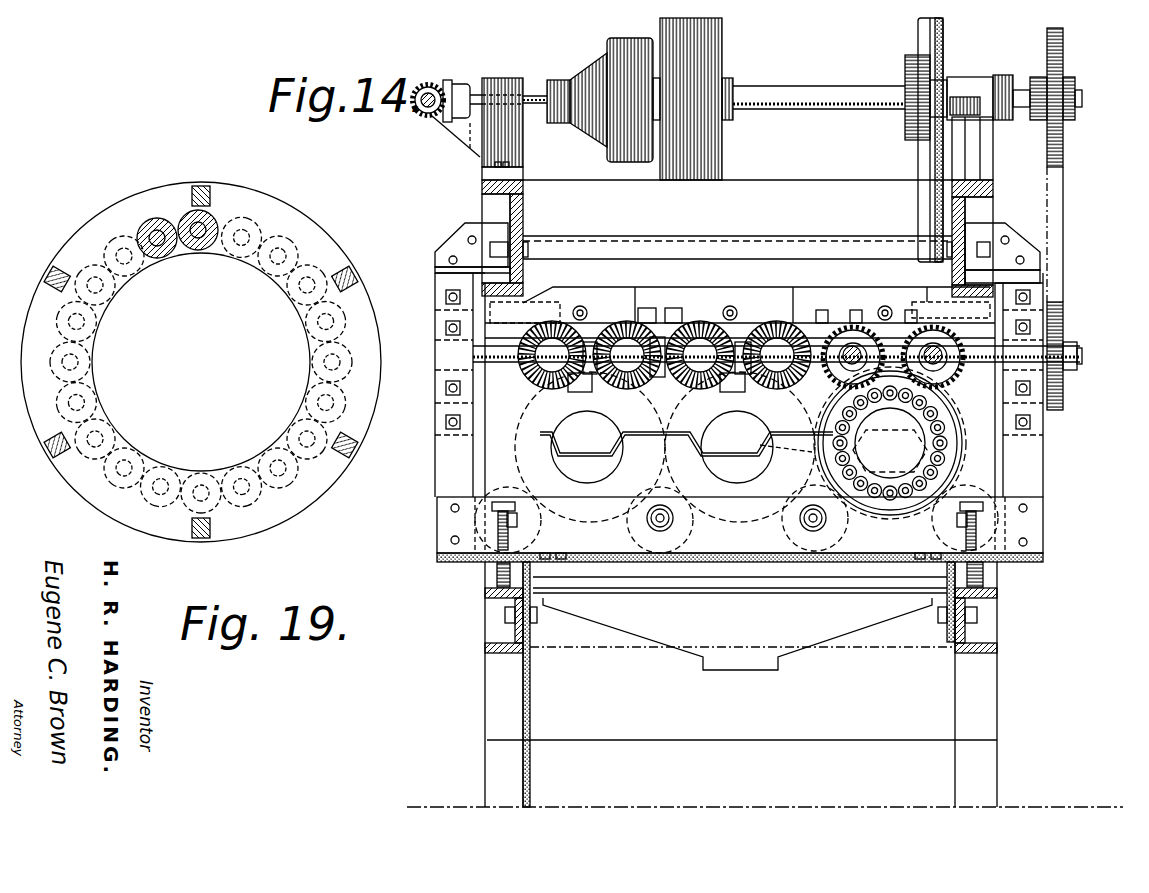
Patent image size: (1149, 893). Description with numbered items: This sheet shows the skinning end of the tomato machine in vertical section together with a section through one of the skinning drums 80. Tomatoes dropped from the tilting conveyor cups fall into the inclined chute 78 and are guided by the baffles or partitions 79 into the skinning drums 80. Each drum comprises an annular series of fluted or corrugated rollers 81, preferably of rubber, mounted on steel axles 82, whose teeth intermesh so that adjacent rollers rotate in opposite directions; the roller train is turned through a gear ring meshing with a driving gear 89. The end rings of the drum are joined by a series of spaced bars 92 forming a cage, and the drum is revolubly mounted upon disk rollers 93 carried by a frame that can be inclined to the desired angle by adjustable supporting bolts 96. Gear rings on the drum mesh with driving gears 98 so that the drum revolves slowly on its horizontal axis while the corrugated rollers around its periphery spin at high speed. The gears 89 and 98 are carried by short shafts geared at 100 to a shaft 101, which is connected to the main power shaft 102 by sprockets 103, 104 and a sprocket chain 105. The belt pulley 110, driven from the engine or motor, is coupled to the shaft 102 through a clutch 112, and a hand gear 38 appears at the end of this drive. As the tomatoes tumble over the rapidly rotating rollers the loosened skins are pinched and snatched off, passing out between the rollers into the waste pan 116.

In FIG. 14, the hand wheel gear 38 is at (422, 110).
In FIG. 14, the inclined chute 78 is at (773, 428).
In FIG. 14, the baffles or partitions 79 is at (655, 457).
In FIG. 14, the skinning drums 80 is at (678, 412).
In FIG. 19, the skinning drums 80 is at (206, 352).
In FIG. 19, the rollers 81 is at (200, 258).
In FIG. 19, the steel axles 82 is at (192, 210).
In FIG. 14, the driving gear 89 is at (933, 359).
In FIG. 19, the spaced bars 92 is at (52, 275).
In FIG. 14, the disk rollers 93 is at (508, 500).
In FIG. 14, the adjustable supporting bolts 96 is at (497, 580).
In FIG. 14, the driving gears 98 is at (853, 359).
In FIG. 14, the gearing 100 is at (765, 322).
In FIG. 14, the shaft 101 is at (500, 362).
In FIG. 14, the main power shaft 102 is at (857, 83).
In FIG. 14, the sprocket 103 is at (1068, 327).
In FIG. 14, the sprocket 104 is at (1063, 58).
In FIG. 14, the sprocket chain 105 is at (1063, 234).
In FIG. 14, the belt pulley 110 is at (722, 147).
In FIG. 14, the clutch 112 is at (607, 58).
In FIG. 14, the waste pan 116 is at (684, 664).